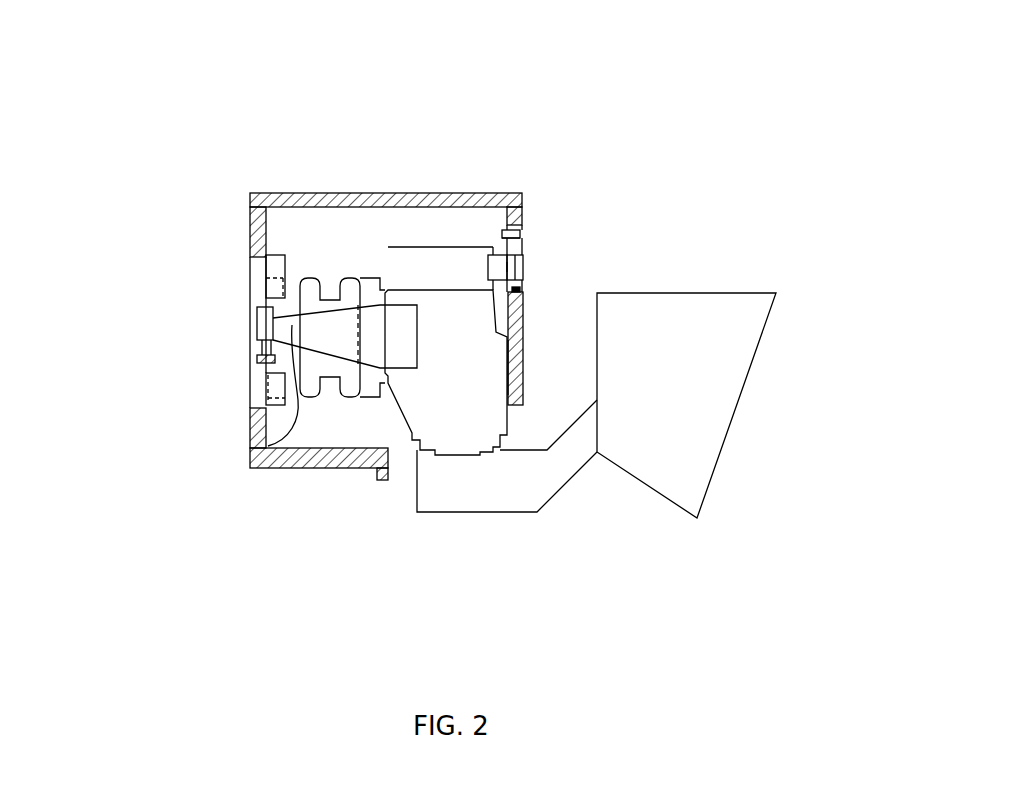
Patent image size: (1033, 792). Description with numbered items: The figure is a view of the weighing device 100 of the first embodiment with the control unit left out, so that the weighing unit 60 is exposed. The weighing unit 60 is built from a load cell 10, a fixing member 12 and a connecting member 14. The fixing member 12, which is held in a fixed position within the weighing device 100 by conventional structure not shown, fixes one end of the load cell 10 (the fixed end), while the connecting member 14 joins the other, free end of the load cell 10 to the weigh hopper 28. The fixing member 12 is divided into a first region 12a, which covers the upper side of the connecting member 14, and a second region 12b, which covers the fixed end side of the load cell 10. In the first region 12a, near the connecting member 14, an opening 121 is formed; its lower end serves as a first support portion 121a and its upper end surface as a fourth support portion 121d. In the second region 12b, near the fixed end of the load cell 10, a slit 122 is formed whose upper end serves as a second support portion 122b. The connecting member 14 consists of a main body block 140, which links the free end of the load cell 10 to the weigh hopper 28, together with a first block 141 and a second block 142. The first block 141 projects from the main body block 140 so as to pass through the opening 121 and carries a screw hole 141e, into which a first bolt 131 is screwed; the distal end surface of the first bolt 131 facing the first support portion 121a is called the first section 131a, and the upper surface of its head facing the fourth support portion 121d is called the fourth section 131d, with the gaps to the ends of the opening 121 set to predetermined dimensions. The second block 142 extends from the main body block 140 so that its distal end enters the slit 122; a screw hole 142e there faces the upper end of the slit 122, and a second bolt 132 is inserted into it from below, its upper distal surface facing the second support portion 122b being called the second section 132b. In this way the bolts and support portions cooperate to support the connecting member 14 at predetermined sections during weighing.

The weighing device 100 is at (327, 92).
The weighing unit 60 is at (262, 161).
The fixing member 12 is at (250, 192).
The first region 12a is at (518, 191).
The second region 12b is at (249, 331).
The load cell 10 is at (330, 390).
The main body block 140 is at (462, 433).
The connecting member 14 is at (514, 440).
The weigh hopper 28 is at (652, 472).
The first block 141 is at (490, 258).
The screw hole 141e is at (531, 262).
The second block 142 is at (252, 450).
The screw hole 142e is at (252, 313).
The opening 121 is at (526, 248).
The first support portion 121a is at (517, 301).
The fourth support portion 121d is at (522, 228).
The slit 122 is at (259, 346).
The second support portion 122b is at (262, 287).
The first bolt 131 is at (529, 261).
The first section 131a is at (526, 275).
The fourth section 131d is at (501, 221).
The second bolt 132 is at (256, 359).
The second section 132b is at (257, 299).